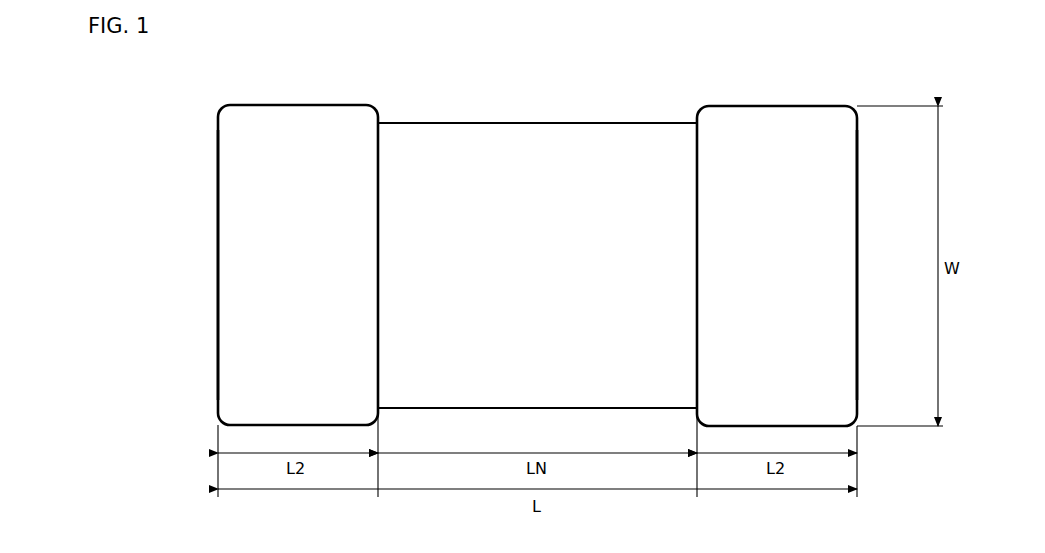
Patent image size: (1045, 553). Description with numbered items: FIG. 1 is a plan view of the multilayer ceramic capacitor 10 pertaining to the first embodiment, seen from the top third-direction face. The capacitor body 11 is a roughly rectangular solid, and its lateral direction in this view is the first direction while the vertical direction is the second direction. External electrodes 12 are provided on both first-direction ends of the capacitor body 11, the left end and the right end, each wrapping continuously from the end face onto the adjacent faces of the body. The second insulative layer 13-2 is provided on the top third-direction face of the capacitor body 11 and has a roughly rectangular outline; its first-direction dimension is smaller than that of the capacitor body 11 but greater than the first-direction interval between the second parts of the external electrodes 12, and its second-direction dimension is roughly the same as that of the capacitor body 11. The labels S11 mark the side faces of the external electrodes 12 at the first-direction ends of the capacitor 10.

The multilayer ceramic capacitor 10 is at (217, 108).
The capacitor body 11 is at (429, 123).
The external electrode 12 is at (218, 216).
The second insulative layer 13-2 is at (578, 183).
The side surface S11 is at (212, 267).